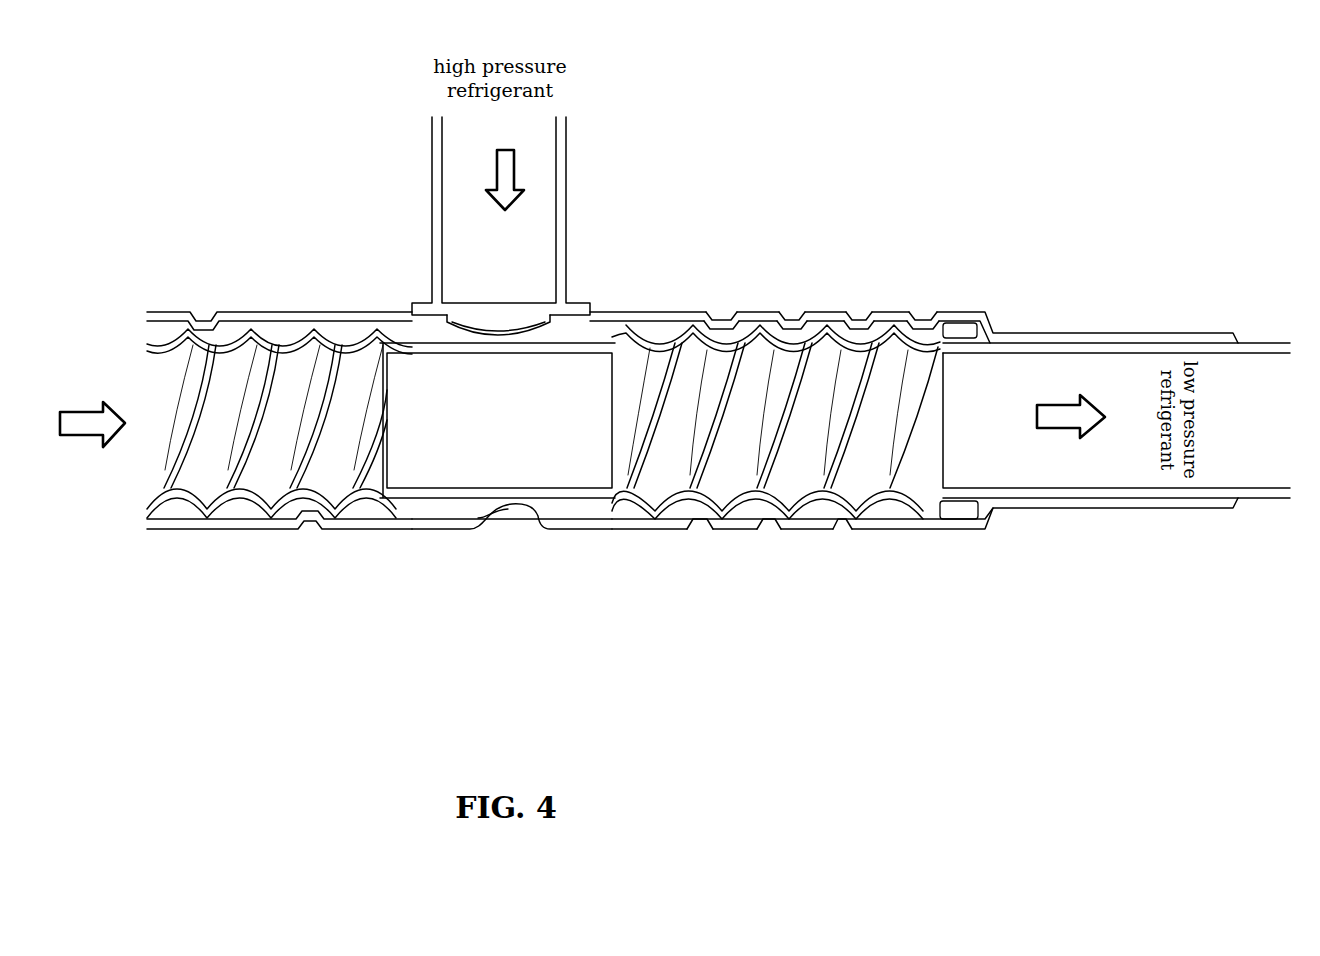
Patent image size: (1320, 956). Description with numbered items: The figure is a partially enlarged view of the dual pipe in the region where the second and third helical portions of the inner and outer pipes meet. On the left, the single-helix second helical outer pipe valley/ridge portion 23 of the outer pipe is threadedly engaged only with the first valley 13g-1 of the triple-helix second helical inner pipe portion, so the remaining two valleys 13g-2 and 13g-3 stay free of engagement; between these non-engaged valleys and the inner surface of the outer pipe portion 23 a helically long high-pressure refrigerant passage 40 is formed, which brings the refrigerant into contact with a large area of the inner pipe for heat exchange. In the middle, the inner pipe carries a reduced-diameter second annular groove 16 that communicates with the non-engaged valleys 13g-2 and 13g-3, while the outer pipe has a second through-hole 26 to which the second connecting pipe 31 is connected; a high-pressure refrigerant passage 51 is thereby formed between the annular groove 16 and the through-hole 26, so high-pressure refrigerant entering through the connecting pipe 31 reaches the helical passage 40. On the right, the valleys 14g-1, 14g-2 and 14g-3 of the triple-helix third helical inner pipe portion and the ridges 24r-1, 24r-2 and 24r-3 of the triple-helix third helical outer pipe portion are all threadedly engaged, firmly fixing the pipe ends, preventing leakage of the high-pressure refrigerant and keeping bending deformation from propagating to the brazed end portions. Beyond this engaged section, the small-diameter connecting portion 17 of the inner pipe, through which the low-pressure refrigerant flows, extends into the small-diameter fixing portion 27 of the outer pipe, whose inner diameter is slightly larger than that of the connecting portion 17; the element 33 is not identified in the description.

The second helical outer pipe valley/ridge portion 23 is at (200, 323).
The high-pressure refrigerant passage 40 is at (272, 330).
The first valley of the second helical inner pipe valley/ridge portion 13g-1 is at (172, 403).
The second valley of the second helical inner pipe valley/ridge portion 13g-2 is at (233, 435).
The third valley of the second helical inner pipe valley/ridge portion 13g-3 is at (302, 403).
The second connecting pipe 31 is at (568, 185).
The second through-hole 26 is at (508, 323).
The high-pressure refrigerant passage 51 is at (582, 527).
The second annular groove 16 is at (468, 529).
The small-diameter fixing portion 27 is at (1069, 333).
The first ridge of the third helical outer pipe valley/ridge portion 24r-1 is at (724, 320).
The second ridge of the third helical outer pipe valley/ridge portion 24r-2 is at (795, 320).
The third ridge of the third helical outer pipe valley/ridge portion 24r-3 is at (860, 320).
The first valley of the third helical inner pipe valley/ridge portion 14g-1 is at (688, 400).
The second valley of the third helical inner pipe valley/ridge portion 14g-2 is at (757, 450).
The third valley of the third helical inner pipe valley/ridge portion 14g-3 is at (833, 420).
The inner tube outlet end 33 is at (1248, 340).
The small-diameter connecting portion 17 is at (1113, 495).